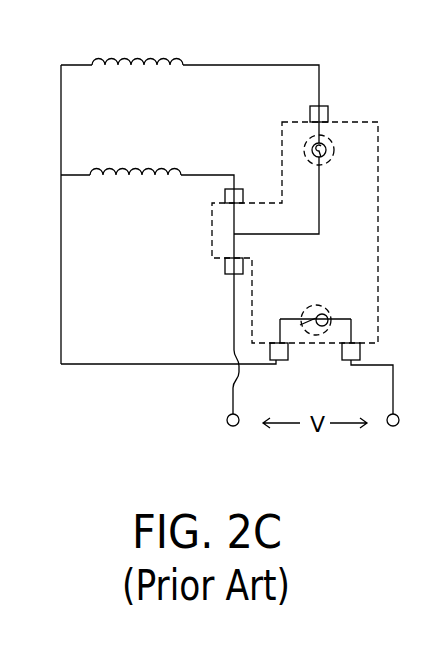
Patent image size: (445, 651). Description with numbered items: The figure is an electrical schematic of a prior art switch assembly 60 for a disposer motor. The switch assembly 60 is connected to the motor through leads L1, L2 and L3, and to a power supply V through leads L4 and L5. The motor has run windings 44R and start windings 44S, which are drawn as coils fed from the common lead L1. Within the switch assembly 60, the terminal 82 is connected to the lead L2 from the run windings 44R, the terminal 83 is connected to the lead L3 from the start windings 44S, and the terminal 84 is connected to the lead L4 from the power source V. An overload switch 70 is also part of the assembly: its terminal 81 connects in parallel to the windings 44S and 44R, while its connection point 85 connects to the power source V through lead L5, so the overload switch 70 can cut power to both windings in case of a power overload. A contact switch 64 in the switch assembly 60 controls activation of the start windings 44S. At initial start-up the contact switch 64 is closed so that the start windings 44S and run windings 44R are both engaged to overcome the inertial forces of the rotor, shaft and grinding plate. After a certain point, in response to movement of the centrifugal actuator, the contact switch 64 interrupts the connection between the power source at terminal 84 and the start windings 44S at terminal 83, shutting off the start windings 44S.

The start windings 44S is at (137, 51).
The run windings 44R is at (135, 161).
The lead L1 is at (156, 365).
The lead L2 is at (203, 176).
The lead L3 is at (278, 67).
The lead L4 is at (233, 393).
The lead L5 is at (393, 398).
The switch assembly 60 is at (378, 230).
The contact switch 64 is at (335, 152).
The overload switch 70 is at (320, 305).
The terminal 81 is at (289, 360).
The terminal 82 is at (243, 196).
The terminal 83 is at (329, 110).
The terminal 84 is at (225, 268).
The connection point 85 is at (343, 359).